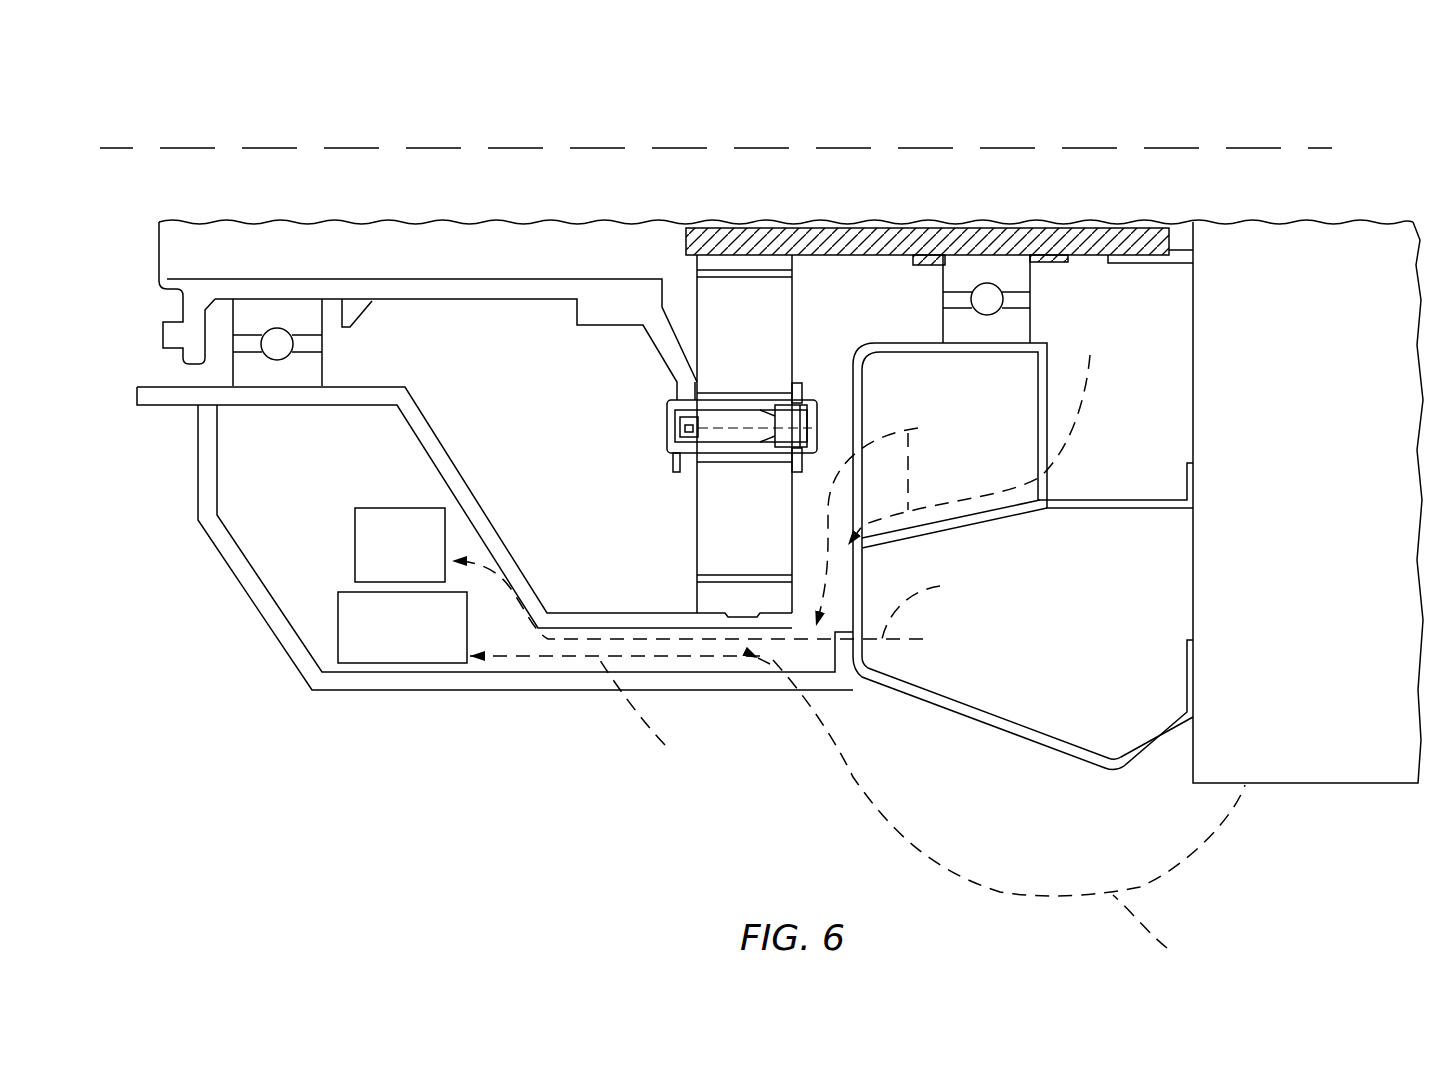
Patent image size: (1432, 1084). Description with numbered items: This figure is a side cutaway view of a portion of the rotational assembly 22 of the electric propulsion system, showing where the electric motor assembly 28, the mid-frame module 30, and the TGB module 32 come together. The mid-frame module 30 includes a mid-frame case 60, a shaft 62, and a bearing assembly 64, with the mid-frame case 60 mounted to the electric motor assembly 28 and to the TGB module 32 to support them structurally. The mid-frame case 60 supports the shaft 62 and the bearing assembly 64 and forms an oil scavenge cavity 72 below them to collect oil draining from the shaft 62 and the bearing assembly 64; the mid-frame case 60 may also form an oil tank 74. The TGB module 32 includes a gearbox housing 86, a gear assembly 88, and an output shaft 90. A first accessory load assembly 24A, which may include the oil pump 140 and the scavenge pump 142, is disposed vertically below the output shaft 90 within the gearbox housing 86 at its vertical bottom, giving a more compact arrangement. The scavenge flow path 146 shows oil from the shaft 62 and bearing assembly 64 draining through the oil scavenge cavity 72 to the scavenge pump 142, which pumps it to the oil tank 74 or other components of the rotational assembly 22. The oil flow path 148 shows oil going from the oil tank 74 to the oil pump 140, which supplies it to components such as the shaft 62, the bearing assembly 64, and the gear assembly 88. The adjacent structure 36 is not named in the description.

The rotational assembly 22 is at (1187, 95).
The first accessory load assembly 24A is at (483, 630).
The electric motor assembly 28 is at (1323, 797).
The mid-frame module 30 is at (988, 742).
The TGB module 32 is at (430, 190).
The engine case structure 36 is at (1280, 148).
The mid-frame case 60 is at (1072, 762).
The shaft 62 is at (917, 243).
The bearing assembly 64 is at (1013, 272).
The oil scavenge cavity 72 is at (1155, 428).
The oil tank 74 is at (1060, 673).
The gearbox housing 86 is at (648, 620).
The gear assembly 88 is at (808, 310).
The output shaft 90 is at (553, 280).
The oil pump 140 is at (447, 532).
The scavenge pump 142 is at (340, 592).
The scavenge flow path 146 is at (918, 428).
The oil flow path 148 is at (940, 585).